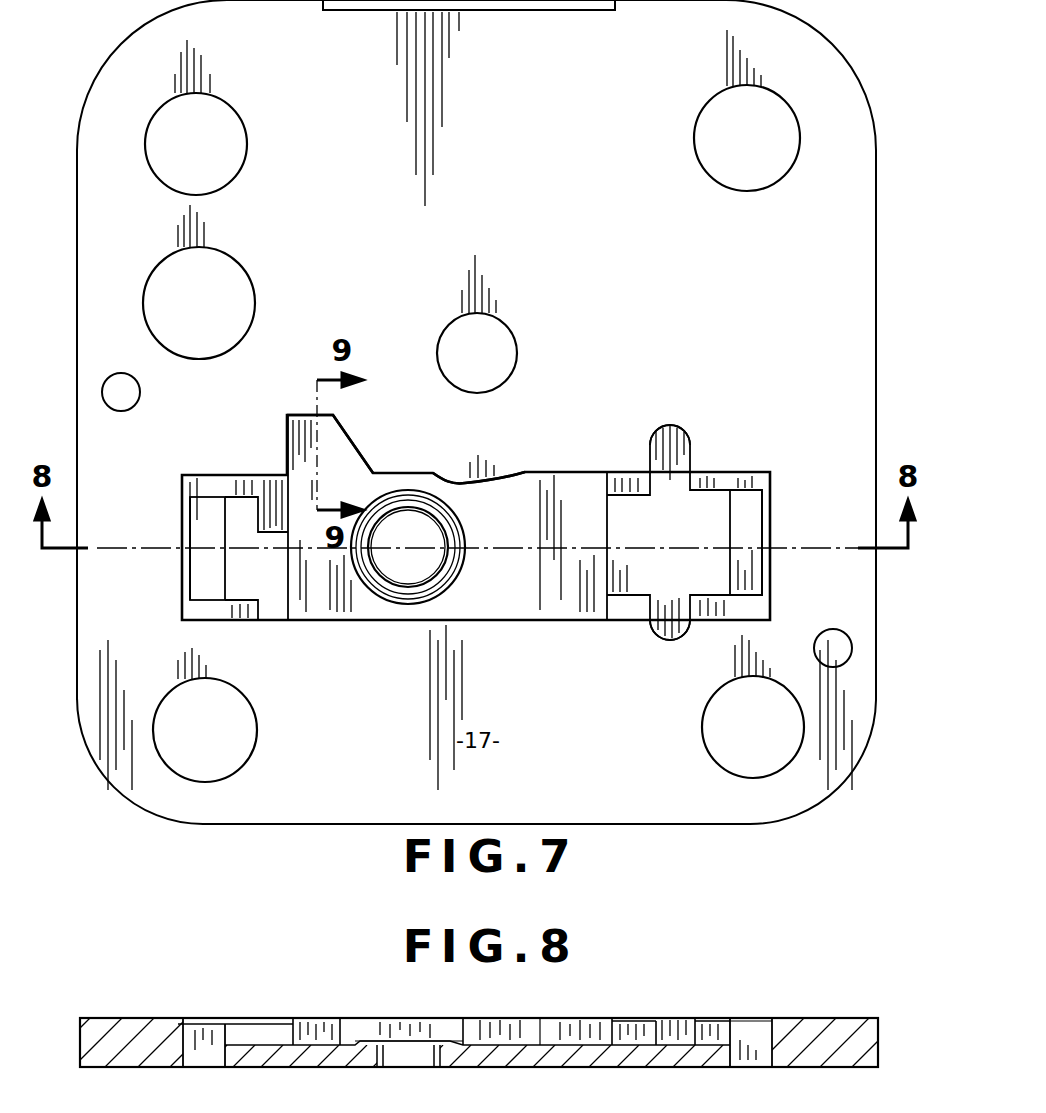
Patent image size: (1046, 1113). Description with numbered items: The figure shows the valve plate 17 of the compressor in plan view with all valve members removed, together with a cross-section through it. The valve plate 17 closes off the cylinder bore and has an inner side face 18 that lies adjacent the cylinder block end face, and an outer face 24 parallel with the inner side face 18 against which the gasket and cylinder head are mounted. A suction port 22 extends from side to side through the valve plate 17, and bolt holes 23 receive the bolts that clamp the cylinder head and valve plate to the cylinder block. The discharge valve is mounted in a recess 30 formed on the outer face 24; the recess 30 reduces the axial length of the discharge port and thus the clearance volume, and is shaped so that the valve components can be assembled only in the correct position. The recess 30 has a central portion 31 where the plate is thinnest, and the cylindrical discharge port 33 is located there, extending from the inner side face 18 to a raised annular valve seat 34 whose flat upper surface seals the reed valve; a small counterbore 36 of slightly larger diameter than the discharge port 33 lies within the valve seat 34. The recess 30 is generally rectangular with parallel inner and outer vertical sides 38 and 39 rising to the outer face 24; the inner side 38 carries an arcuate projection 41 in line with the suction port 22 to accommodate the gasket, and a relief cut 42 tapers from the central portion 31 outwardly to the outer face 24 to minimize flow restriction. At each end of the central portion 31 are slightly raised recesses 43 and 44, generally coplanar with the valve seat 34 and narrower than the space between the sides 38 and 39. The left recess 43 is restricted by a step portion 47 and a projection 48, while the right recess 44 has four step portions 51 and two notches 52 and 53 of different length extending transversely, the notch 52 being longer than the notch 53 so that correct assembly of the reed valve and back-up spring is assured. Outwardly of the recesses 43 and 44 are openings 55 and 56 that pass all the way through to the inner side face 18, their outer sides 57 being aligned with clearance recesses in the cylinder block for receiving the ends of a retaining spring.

In FIG. 7, the valve plate 17 is at (476, 412).
In FIG. 8, the valve plate 17 is at (815, 1032).
In FIG. 8, the inner side face 18 is at (105, 1067).
In FIG. 7, the suction port 22 is at (478, 314).
In FIG. 7, the bolt holes 23 is at (195, 100).
In FIG. 7, the outer face 24 is at (322, 788).
In FIG. 8, the outer face 24 is at (112, 1018).
In FIG. 7, the recess 30 is at (517, 506).
In FIG. 8, the recess 30 is at (534, 1031).
In FIG. 7, the central portion 31 is at (510, 600).
In FIG. 8, the central portion 31 is at (570, 1040).
In FIG. 7, the discharge port 33 is at (382, 566).
In FIG. 8, the discharge port 33 is at (445, 1060).
In FIG. 7, the raised annular valve seat 34 is at (448, 575).
In FIG. 8, the raised annular valve seat 34 is at (457, 1030).
In FIG. 7, the counterbore 36 is at (448, 530).
In FIG. 8, the counterbore 36 is at (378, 1040).
In FIG. 7, the inner side 38 is at (580, 478).
In FIG. 8, the inner side 38 is at (390, 1030).
In FIG. 7, the outer side 39 is at (573, 608).
In FIG. 7, the arcuate projection 41 is at (452, 482).
In FIG. 7, the relief cut 42 is at (342, 458).
In FIG. 7, the left recess 43 is at (255, 570).
In FIG. 8, the left recess 43 is at (243, 1042).
In FIG. 7, the right recess 44 is at (653, 575).
In FIG. 8, the right recess 44 is at (630, 1038).
In FIG. 7, the step portion 47 is at (242, 605).
In FIG. 8, the step portion 47 is at (283, 1023).
In FIG. 7, the projection 48 is at (272, 520).
In FIG. 7, the step portions 51 is at (710, 478).
In FIG. 7, the notch 52 is at (675, 425).
In FIG. 7, the notch 53 is at (667, 640).
In FIG. 7, the opening 55 is at (205, 522).
In FIG. 8, the opening 55 is at (216, 1032).
In FIG. 7, the opening 56 is at (745, 510).
In FIG. 8, the opening 56 is at (745, 1036).
In FIG. 7, the outer sides 57 is at (200, 560).
In FIG. 8, the outer sides 57 is at (187, 1052).